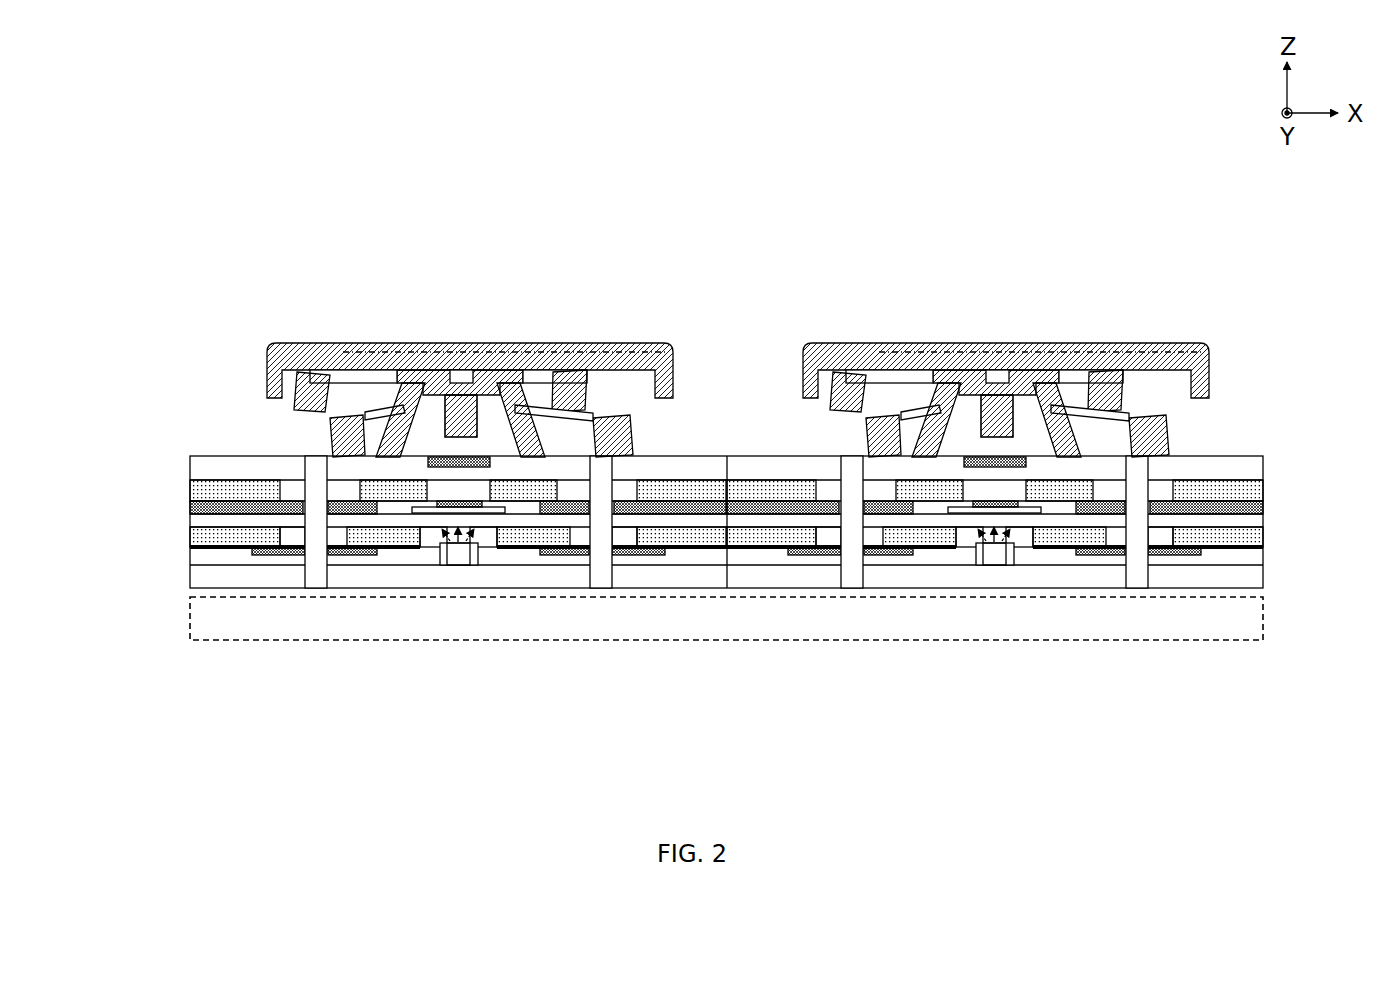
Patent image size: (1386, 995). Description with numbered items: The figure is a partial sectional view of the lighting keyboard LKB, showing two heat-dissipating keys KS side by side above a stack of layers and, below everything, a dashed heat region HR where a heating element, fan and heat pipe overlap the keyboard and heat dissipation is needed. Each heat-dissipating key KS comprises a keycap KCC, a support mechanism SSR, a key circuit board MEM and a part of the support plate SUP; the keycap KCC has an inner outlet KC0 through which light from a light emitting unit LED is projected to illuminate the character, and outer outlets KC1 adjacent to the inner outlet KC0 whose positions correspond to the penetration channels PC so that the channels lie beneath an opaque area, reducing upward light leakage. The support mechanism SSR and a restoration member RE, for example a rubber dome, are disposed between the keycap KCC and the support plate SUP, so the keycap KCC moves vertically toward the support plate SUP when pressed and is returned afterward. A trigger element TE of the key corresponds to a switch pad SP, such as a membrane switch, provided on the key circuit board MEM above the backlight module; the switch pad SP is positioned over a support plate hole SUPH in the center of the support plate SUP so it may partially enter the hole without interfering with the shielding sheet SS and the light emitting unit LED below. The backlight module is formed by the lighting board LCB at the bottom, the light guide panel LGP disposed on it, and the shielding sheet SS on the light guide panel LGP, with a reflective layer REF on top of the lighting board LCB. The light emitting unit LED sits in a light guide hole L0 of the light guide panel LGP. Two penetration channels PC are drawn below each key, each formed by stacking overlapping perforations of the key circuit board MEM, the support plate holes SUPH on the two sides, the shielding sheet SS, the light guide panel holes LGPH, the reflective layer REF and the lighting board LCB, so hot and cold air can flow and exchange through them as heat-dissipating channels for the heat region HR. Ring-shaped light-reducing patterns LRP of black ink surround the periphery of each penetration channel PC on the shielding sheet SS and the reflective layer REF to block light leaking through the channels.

The lighting keyboard LKB is at (310, 128).
The heat-dissipating key KS is at (440, 248).
The keycap KCC is at (530, 334).
The outer outlet KC1 is at (318, 343).
The inner outlet KC0 is at (427, 373).
The trigger element TE is at (465, 407).
The support mechanism SSR is at (340, 432).
The restoration member RE is at (525, 440).
The switch pad SP is at (437, 457).
The penetration channel PC is at (313, 467).
The key circuit board MEM is at (190, 466).
The support plate SUP is at (190, 494).
The shielding sheet SS is at (188, 503).
The light guide panel LGP is at (190, 537).
The reflective layer REF is at (1263, 553).
The lighting board LCB is at (190, 575).
The heat region HR is at (190, 620).
The support plate hole SUPH is at (277, 490).
The light guide panel hole LGPH is at (284, 537).
The light-reducing pattern LRP is at (362, 510).
The light guide hole L0 is at (413, 533).
The light emitting unit LED is at (458, 555).